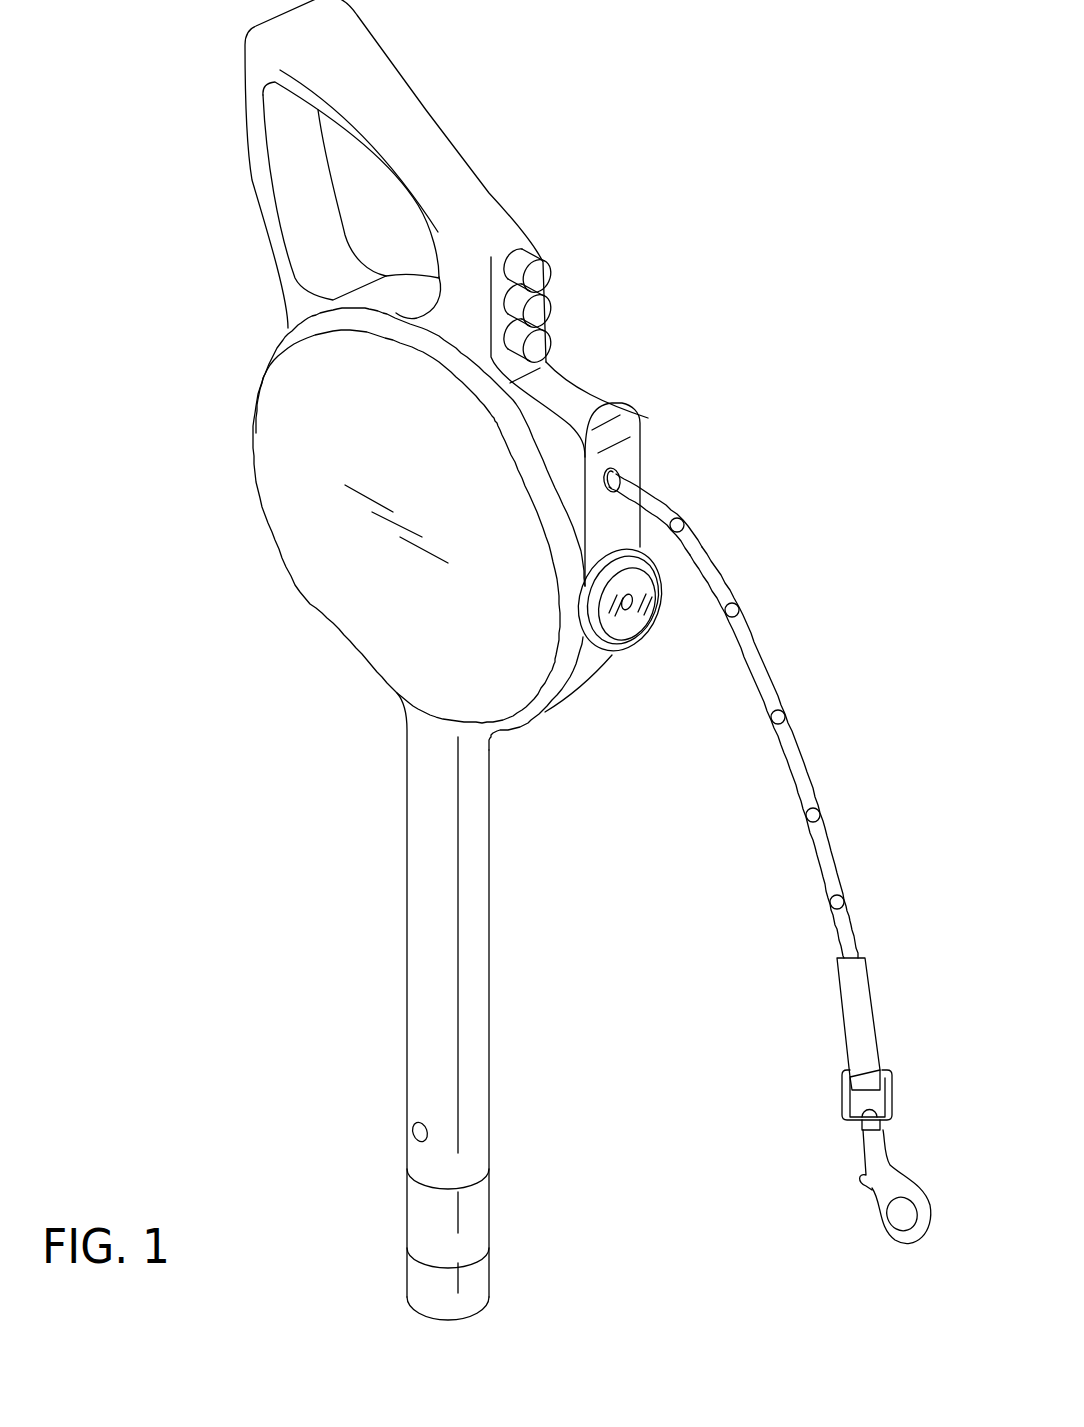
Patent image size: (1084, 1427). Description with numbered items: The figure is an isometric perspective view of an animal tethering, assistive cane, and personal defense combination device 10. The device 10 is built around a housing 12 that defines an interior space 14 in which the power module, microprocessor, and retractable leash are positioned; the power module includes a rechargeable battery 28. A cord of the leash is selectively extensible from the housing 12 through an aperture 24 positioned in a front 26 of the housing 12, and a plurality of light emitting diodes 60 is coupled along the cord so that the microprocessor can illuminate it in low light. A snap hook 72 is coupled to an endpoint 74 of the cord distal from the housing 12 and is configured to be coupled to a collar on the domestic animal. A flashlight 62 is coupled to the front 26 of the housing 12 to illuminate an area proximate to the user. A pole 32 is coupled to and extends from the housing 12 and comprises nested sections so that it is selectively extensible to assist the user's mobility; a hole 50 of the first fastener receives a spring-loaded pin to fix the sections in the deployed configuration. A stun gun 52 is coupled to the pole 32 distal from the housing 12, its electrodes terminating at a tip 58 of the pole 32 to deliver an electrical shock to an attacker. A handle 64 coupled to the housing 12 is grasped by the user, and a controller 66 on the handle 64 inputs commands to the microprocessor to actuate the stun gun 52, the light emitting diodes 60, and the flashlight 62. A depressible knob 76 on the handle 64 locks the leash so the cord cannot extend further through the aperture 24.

The animal tethering, assistive cane, and personal defense combination device 10 is at (812, 548).
The housing 12 is at (600, 390).
The interior space 14 is at (468, 468).
The aperture 24 is at (696, 463).
The front 26 is at (692, 513).
The battery 28 is at (762, 672).
The pole 32 is at (494, 1021).
The hole 50 is at (410, 1136).
The stun gun 52 is at (468, 1290).
The tip 58 is at (492, 1311).
The plurality of light emitting diodes 60 is at (692, 533).
The flashlight 62 is at (629, 632).
The handle 64 is at (398, 124).
The controller 66 is at (558, 305).
The snap hook 72 is at (925, 1190).
The endpoint 74 is at (873, 1080).
The knob 76 is at (558, 342).